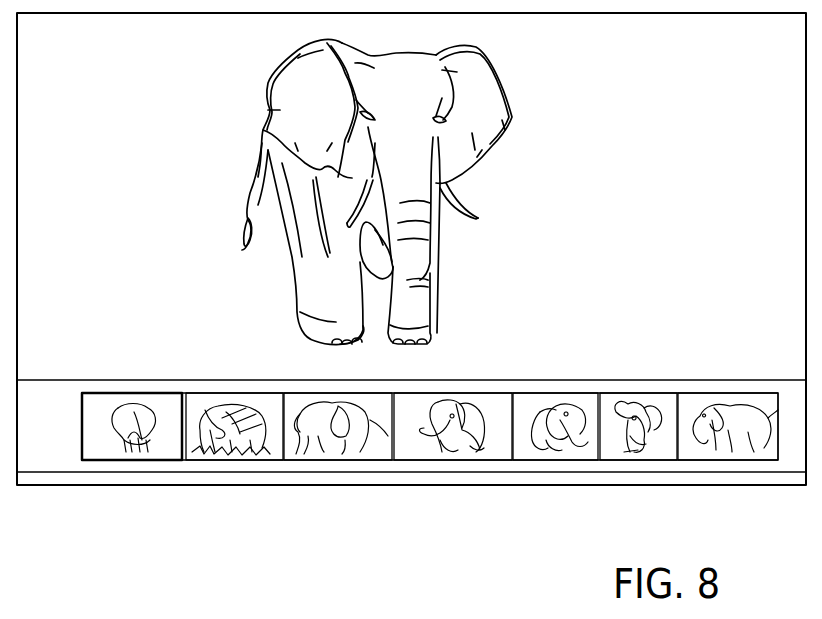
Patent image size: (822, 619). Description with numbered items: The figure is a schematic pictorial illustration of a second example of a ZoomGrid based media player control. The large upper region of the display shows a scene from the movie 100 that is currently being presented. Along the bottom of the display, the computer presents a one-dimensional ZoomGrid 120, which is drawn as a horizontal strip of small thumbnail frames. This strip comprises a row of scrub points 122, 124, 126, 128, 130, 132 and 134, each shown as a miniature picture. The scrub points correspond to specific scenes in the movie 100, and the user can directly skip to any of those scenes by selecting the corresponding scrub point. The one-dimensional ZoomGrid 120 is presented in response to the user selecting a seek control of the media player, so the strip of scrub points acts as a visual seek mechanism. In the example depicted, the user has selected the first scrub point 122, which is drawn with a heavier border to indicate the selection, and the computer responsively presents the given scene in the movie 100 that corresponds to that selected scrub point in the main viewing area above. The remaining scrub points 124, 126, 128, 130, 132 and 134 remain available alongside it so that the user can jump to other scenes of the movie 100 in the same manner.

The movie 100 is at (201, 128).
The one-dimensional ZoomGrid 120 is at (65, 455).
The scrub point 122 is at (135, 463).
The scrub point 124 is at (238, 463).
The scrub point 126 is at (332, 463).
The scrub point 128 is at (450, 463).
The scrub point 130 is at (572, 463).
The scrub point 132 is at (647, 463).
The scrub point 134 is at (718, 463).